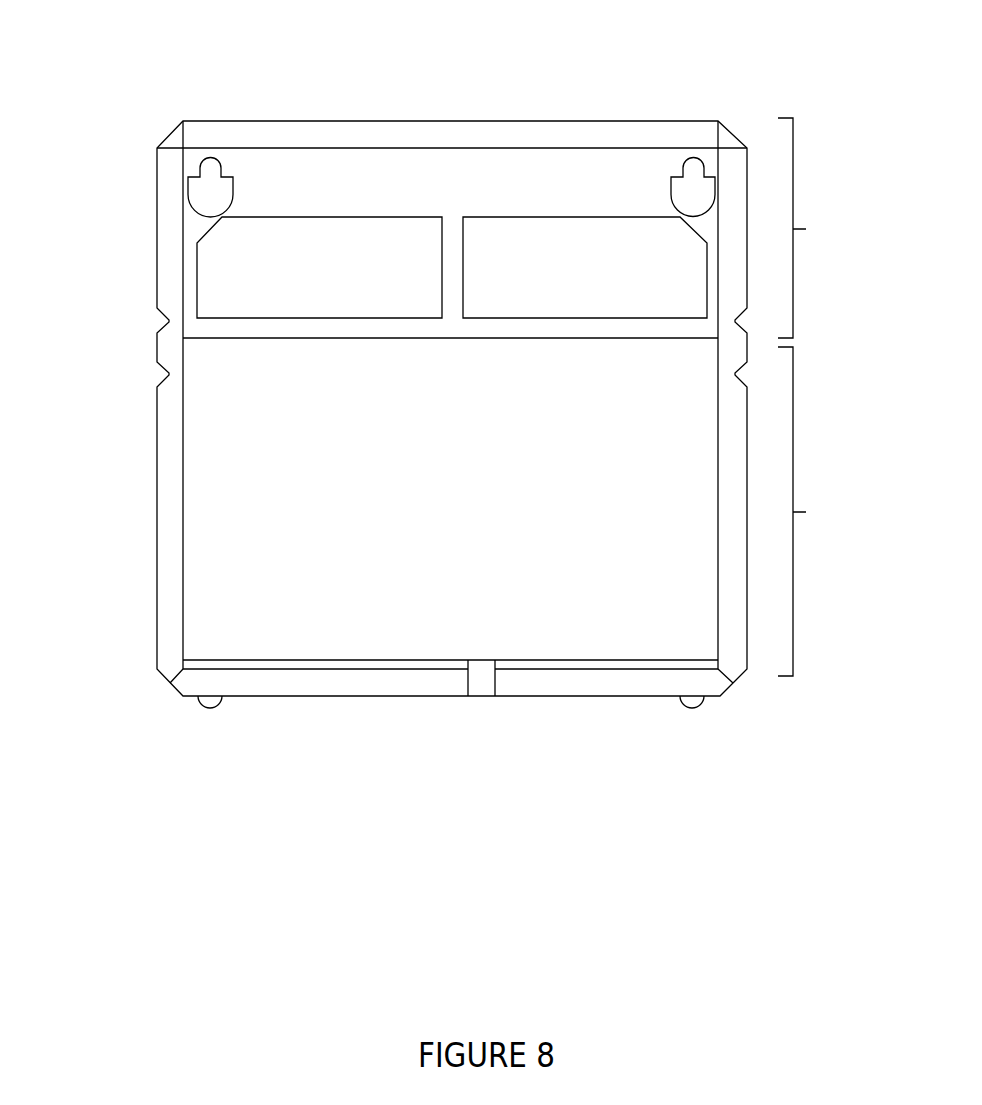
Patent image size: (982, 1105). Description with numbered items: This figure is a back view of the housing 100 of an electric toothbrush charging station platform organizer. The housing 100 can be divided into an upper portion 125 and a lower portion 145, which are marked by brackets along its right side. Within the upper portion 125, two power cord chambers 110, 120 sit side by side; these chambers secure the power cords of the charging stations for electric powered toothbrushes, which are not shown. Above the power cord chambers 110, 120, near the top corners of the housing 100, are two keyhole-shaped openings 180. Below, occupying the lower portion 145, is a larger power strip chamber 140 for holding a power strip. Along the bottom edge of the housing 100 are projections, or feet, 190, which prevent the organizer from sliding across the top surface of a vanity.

The housing 100 is at (101, 62).
The power cord chamber 110 is at (260, 251).
The power cord chamber 120 is at (578, 268).
The upper portion 125 is at (830, 228).
The power strip chamber 140 is at (270, 457).
The lower portion 145 is at (830, 511).
The keyhole mounting slot 180 is at (195, 190).
The projections (feet) 190 is at (690, 707).